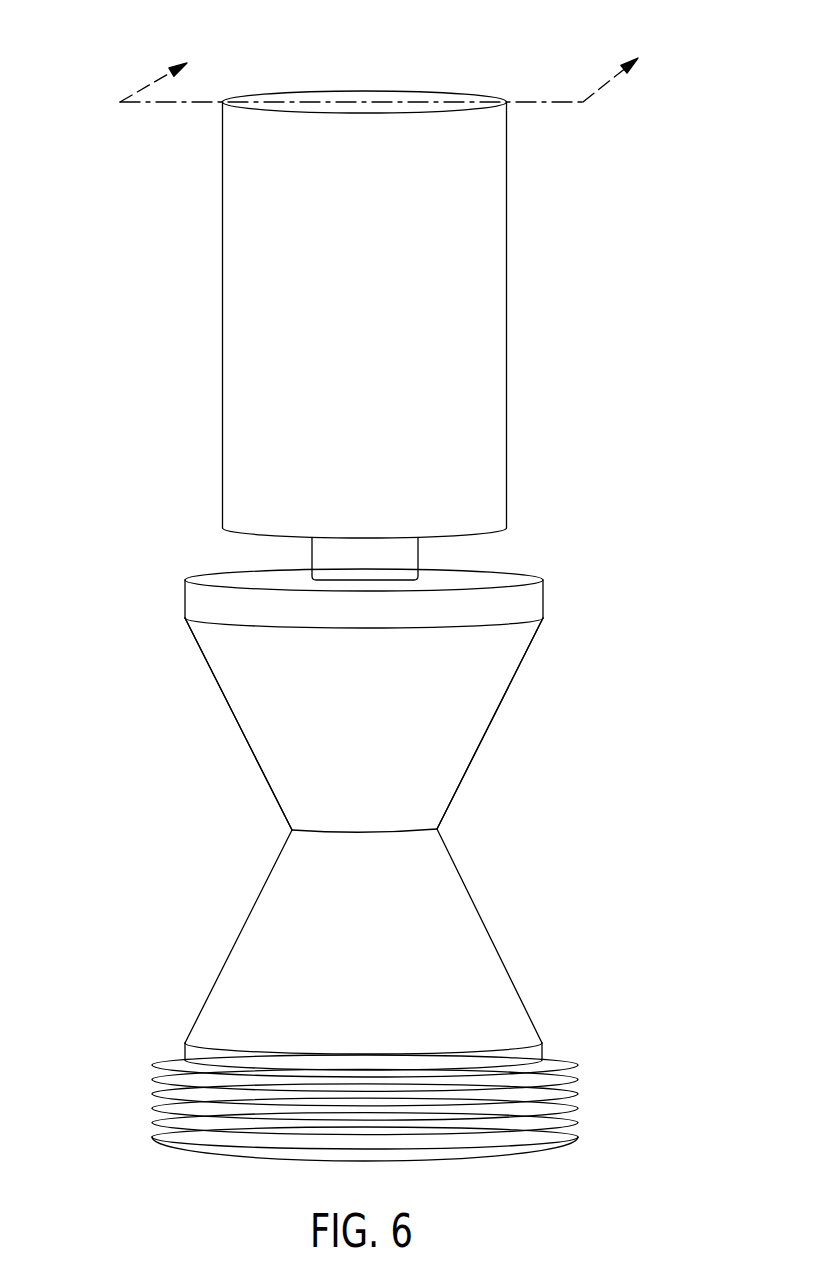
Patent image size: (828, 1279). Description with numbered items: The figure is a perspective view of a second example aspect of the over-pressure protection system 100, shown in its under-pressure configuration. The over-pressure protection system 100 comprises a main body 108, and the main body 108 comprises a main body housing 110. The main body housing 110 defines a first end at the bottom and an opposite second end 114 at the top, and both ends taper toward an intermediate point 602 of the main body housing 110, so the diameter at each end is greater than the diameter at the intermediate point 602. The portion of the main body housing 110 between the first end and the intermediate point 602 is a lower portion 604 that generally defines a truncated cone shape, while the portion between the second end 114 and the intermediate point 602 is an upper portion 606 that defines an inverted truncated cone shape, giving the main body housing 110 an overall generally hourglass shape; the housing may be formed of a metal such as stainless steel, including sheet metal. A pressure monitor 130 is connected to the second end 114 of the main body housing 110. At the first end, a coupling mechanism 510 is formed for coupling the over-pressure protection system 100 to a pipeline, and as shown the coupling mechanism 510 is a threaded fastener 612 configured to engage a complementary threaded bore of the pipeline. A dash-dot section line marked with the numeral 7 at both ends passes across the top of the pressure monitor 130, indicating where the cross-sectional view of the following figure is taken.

The over-pressure protection system 100 is at (142, 186).
The section line 7- 7 is at (391, 69).
The pressure monitor 130 is at (487, 312).
The second end 114 is at (516, 580).
The main body housing 110 is at (225, 670).
The main body 108 is at (498, 667).
The upper portion 606 is at (458, 728).
The intermediate point 602 is at (413, 830).
The lower portion 604 is at (505, 1002).
The threaded fastener 612 is at (573, 1082).
The coupling mechanism 510 is at (572, 1113).